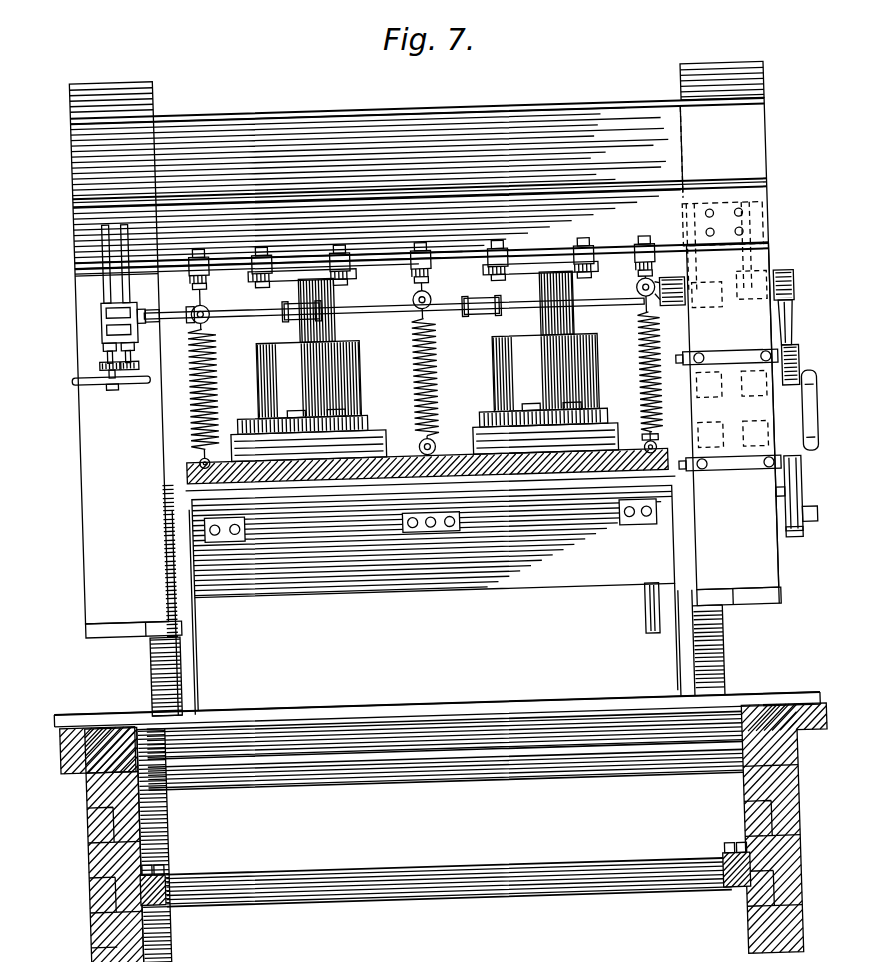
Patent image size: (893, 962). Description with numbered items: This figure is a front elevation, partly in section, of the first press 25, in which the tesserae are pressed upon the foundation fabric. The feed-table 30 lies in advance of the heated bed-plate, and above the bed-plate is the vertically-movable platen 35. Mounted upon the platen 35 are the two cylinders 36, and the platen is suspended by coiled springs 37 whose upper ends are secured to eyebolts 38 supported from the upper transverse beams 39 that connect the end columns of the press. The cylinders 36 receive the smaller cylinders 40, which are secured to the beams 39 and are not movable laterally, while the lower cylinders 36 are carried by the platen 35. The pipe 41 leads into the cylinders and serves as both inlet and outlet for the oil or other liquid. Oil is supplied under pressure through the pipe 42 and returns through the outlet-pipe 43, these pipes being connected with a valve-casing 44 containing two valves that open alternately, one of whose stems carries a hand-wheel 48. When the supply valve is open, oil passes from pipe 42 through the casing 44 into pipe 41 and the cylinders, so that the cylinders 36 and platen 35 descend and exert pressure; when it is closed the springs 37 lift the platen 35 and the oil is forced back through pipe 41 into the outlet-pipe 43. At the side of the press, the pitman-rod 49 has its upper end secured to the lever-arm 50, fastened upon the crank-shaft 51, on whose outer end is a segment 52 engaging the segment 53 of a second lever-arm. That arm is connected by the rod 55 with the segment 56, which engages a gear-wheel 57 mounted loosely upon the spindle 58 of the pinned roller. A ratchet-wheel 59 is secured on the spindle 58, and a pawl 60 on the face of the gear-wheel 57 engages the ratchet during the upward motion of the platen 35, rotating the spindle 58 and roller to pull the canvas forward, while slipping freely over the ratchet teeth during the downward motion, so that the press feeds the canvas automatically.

The press 25 is at (436, 646).
The feed-table 30 is at (612, 497).
The platen 35 is at (404, 426).
The cylinders 36 is at (497, 368).
The coiled springs 37 is at (221, 365).
The eyebolts 38 is at (216, 283).
The upper transverse beams 39 is at (421, 235).
The smaller cylinders 40 is at (340, 292).
The pipe 41 is at (400, 312).
The pipe 42 is at (136, 281).
The outlet-pipe 43 is at (110, 283).
The valve-casing 44 is at (107, 322).
The hand-wheel 48 is at (138, 375).
The pitman-rod 49 is at (660, 440).
The lever-arm 50 is at (670, 282).
The crank-shaft 51 is at (800, 292).
The segment 52 is at (800, 322).
The segment 53 is at (803, 372).
The rod 55 is at (820, 409).
The segment 56 is at (802, 480).
The gear-wheel 57 is at (793, 547).
The spindle 58 is at (812, 517).
The ratchet-wheel 59 is at (775, 545).
The pawl 60 is at (776, 502).